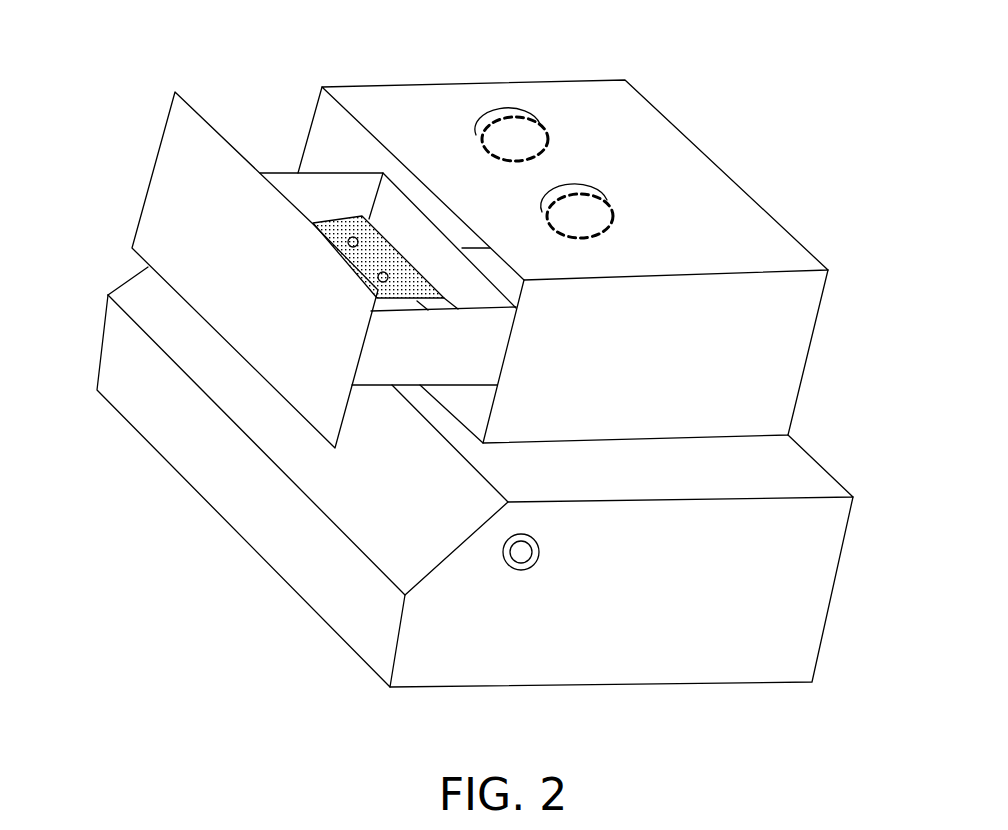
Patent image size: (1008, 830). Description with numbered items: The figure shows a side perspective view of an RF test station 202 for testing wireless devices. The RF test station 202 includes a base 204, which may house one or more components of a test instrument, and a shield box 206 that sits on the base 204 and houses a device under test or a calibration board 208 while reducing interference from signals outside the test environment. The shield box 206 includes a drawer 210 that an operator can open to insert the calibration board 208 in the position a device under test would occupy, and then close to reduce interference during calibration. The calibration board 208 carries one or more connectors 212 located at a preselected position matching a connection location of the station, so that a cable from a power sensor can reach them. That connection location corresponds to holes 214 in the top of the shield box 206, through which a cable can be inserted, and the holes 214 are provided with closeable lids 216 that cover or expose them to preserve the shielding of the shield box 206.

The RF test station 202 is at (769, 52).
The base 204 is at (420, 688).
The shield box 206 is at (720, 167).
The calibration board 208 is at (441, 302).
The drawer 210 is at (166, 86).
The connectors 212 is at (354, 238).
The holes 214 is at (480, 105).
The closeable lids 216 is at (518, 132).